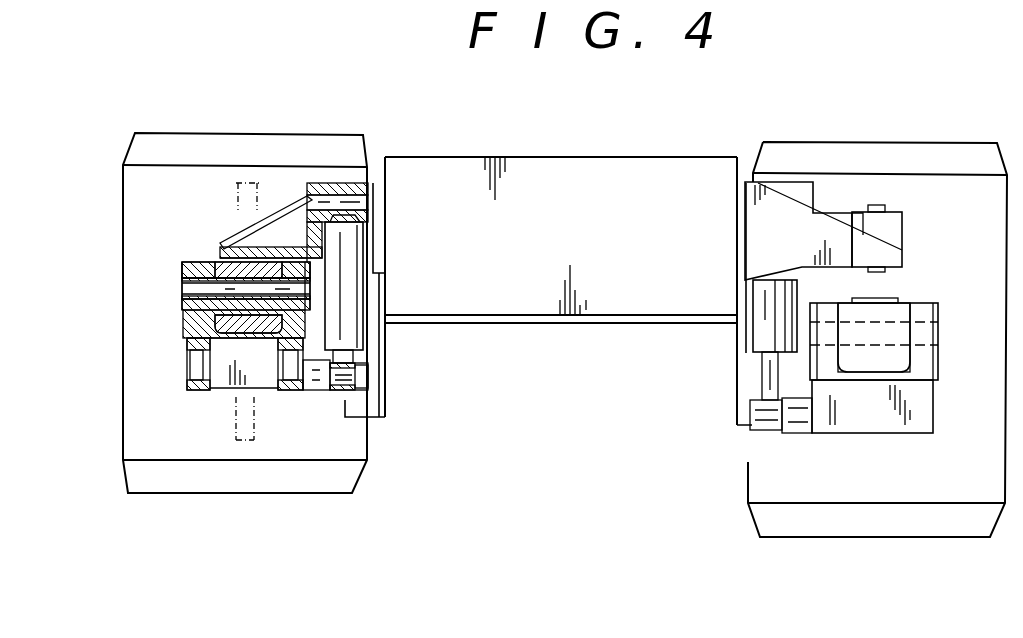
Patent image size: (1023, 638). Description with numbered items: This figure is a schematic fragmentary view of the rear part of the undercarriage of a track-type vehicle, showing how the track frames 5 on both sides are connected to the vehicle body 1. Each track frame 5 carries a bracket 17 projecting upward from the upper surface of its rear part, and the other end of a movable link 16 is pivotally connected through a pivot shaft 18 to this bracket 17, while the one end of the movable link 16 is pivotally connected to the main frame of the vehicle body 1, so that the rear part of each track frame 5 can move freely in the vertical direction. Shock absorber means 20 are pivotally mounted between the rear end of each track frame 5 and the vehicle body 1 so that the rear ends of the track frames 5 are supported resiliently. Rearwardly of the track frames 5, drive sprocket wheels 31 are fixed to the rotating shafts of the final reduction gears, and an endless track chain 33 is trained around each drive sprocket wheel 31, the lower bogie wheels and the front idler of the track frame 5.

The track-type vehicle body 1 is at (532, 323).
The track frame 5 is at (188, 378).
The movable link 16 is at (215, 327).
The bracket 17 is at (197, 268).
The pivot shaft 18 is at (182, 290).
The shock absorber means 20 is at (367, 302).
The drive sprocket wheel 31 is at (238, 204).
The endless track chain 33 is at (147, 165).